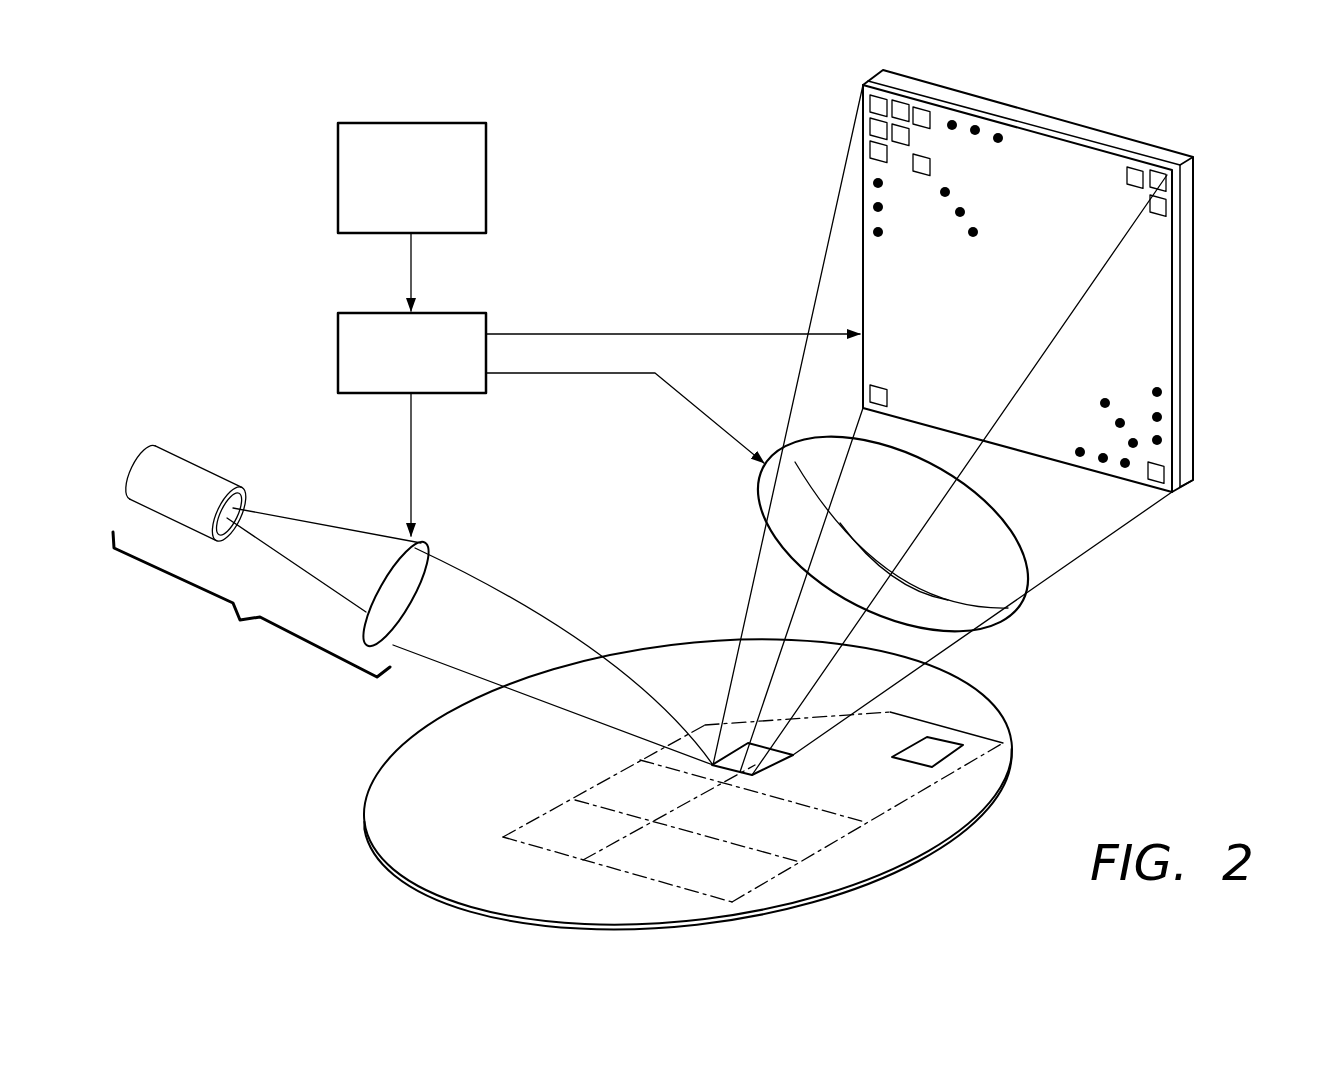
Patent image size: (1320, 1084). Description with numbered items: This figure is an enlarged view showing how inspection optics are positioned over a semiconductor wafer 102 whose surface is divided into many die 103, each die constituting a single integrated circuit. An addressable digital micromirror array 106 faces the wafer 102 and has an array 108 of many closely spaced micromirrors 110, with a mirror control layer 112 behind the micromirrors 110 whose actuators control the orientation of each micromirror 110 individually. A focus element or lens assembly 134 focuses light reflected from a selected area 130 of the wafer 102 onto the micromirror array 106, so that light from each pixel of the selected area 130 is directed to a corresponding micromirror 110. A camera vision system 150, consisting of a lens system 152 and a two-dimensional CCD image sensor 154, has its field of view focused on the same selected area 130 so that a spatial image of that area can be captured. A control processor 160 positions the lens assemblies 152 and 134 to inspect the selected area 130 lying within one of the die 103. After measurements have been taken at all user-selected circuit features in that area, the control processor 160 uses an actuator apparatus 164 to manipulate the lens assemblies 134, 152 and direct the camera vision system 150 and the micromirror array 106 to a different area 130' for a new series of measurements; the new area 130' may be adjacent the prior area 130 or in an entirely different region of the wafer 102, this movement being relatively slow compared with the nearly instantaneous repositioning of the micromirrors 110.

The semiconductor wafer 102 is at (367, 806).
The die 103 is at (543, 822).
The micromirror array 106 is at (1082, 371).
The array of micromirrors 108 is at (1177, 262).
The micromirror 110 is at (1131, 183).
The mirror control layer 112 is at (1186, 341).
The selected area 130 is at (732, 715).
The new area 130' is at (979, 718).
The focus element (lens assembly) 134 is at (758, 491).
The camera vision system 150 is at (233, 624).
The lens system 152 is at (431, 540).
The two-dimensional CCD image sensor 154 is at (190, 475).
The control processor 160 is at (351, 131).
The actuator apparatus 164 is at (351, 321).